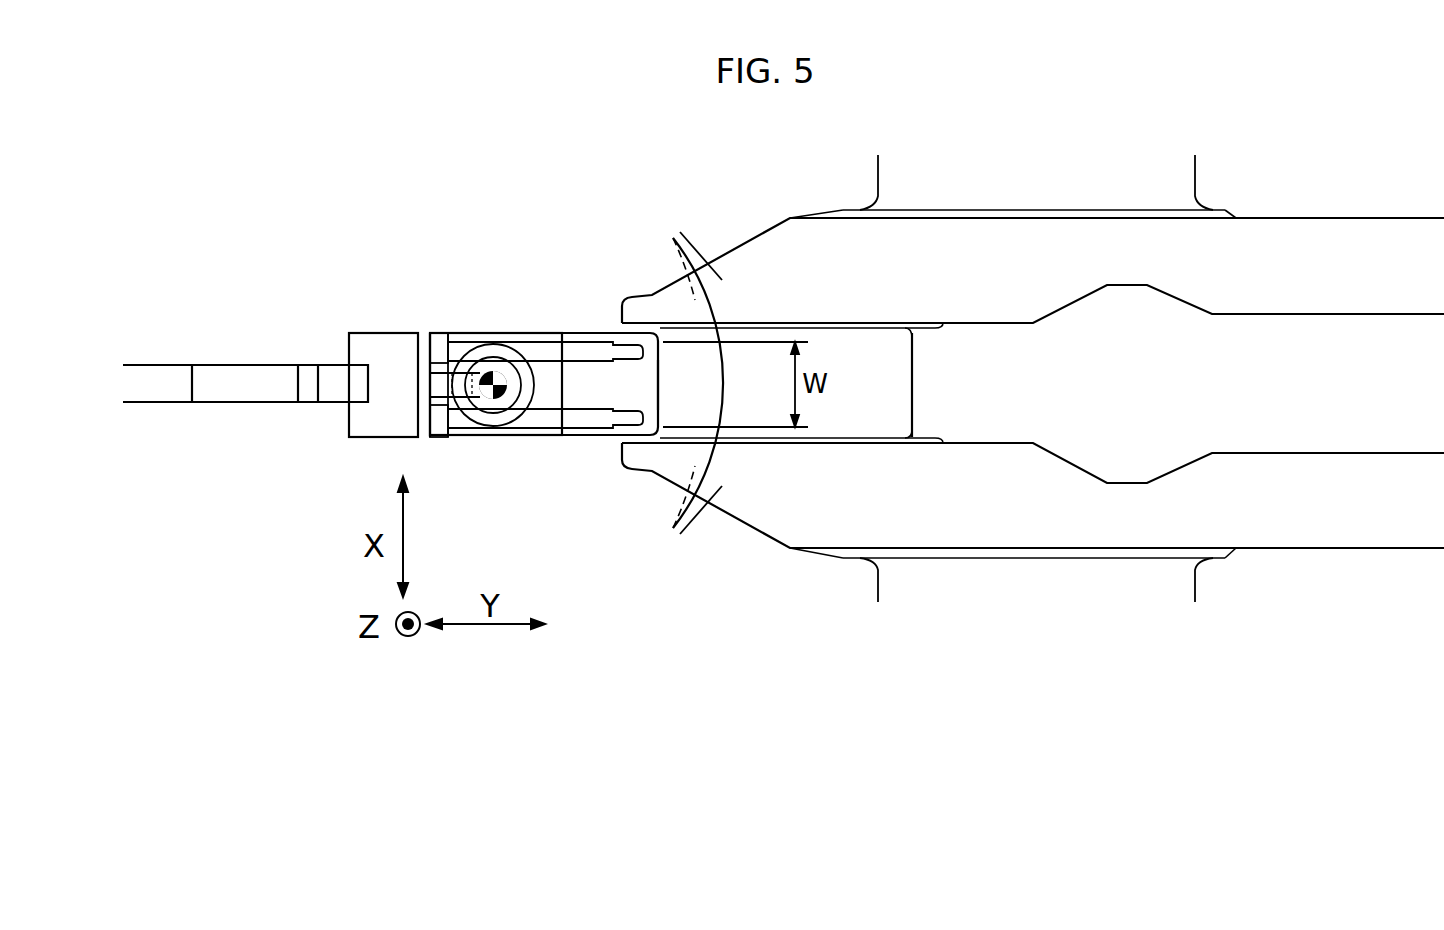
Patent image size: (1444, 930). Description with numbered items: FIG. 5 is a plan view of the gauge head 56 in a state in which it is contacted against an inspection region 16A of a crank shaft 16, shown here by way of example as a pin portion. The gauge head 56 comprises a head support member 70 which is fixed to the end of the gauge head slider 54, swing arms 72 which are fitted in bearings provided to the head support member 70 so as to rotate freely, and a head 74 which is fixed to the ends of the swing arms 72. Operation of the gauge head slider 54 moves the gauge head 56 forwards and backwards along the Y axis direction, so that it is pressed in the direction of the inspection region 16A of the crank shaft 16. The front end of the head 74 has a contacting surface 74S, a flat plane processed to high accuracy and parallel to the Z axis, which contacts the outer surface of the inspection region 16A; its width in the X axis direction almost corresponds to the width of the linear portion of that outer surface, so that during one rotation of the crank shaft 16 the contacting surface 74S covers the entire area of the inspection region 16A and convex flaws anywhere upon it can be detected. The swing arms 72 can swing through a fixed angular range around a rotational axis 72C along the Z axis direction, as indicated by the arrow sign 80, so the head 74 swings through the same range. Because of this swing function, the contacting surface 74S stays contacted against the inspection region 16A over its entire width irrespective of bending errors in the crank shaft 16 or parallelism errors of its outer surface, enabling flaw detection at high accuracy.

The crank shaft 16 is at (741, 226).
The inspection region 16A is at (890, 381).
The gauge head slider 54 is at (247, 365).
The gauge head 56 is at (481, 262).
The head support member 70 is at (388, 333).
The swing arms 72 is at (477, 333).
The rotational axis 72C is at (497, 400).
The head 74 is at (590, 333).
The contacting surface 74S is at (658, 383).
The arrow sign 80 is at (717, 312).